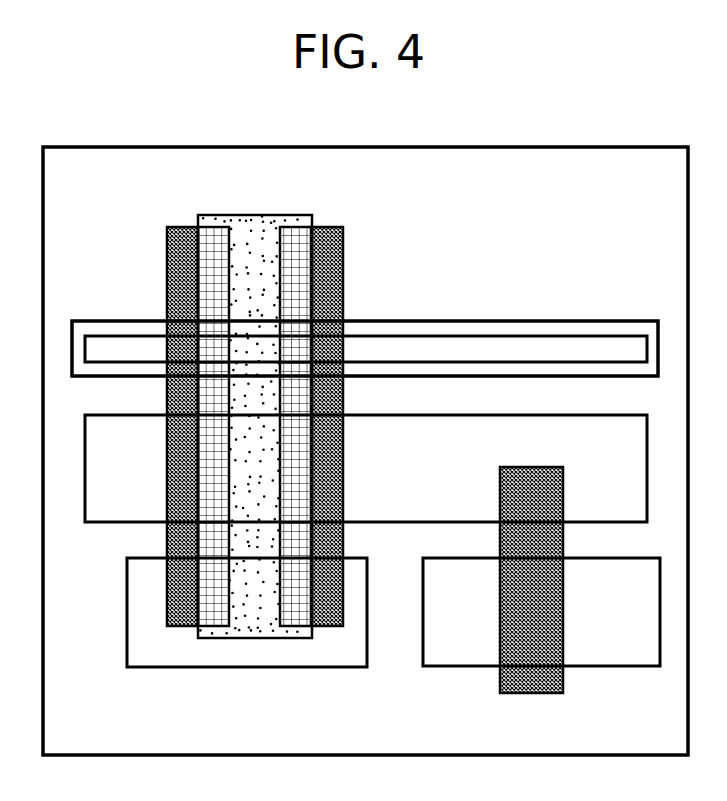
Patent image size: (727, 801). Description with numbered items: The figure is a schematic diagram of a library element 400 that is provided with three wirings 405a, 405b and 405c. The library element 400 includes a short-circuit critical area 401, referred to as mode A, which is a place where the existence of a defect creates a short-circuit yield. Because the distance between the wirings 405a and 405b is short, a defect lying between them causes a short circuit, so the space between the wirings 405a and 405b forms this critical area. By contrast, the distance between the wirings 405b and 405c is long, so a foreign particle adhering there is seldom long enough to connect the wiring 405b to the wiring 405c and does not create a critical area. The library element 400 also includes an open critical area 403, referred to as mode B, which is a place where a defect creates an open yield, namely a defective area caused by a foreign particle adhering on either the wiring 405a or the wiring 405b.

The library element 400 is at (602, 143).
The short-circuit critical area 401 is at (258, 639).
The open critical area 403 is at (595, 318).
The wiring 405a is at (180, 627).
The wiring 405b is at (330, 627).
The wiring 405c is at (565, 683).